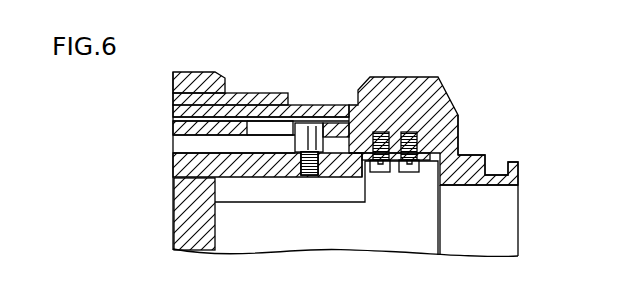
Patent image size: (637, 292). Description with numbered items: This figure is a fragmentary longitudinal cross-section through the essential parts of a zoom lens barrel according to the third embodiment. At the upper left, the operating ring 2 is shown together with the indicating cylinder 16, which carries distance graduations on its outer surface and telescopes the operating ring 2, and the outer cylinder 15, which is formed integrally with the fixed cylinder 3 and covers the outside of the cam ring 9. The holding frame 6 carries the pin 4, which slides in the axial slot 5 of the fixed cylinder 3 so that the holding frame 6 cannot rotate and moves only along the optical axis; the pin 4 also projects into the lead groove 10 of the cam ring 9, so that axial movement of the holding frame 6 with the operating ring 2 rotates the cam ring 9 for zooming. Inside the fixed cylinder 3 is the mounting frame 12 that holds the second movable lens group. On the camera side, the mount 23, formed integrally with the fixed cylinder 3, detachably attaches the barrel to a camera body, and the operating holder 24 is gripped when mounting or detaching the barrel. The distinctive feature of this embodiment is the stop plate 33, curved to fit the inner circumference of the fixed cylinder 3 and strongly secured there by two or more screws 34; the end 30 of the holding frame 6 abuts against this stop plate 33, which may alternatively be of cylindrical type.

The operating ring 2 is at (212, 80).
The indicating cylinder 16 is at (236, 98).
The outer cylinder 15 is at (260, 110).
The lead groove 10 is at (282, 130).
The pin 4 is at (322, 130).
The cam ring 9 is at (173, 127).
The axial slot 5 is at (232, 148).
The holding frame 6 is at (278, 162).
The fixed cylinder 3 is at (336, 148).
The mounting frame 12 is at (204, 214).
The end of holding frame 30 is at (349, 153).
The operating holder 24 is at (428, 84).
The stop plate 33 is at (457, 140).
The mount 23 is at (497, 170).
The screws 34 is at (398, 168).